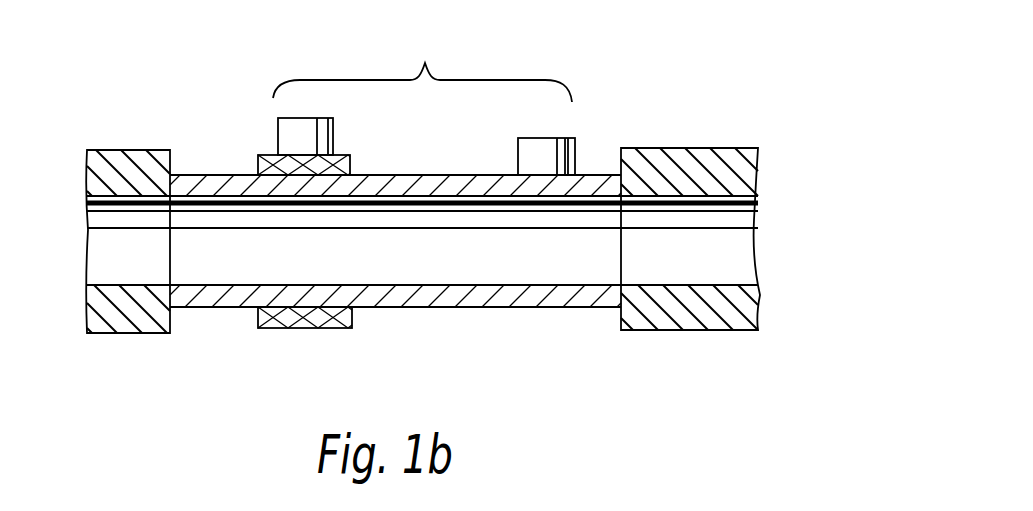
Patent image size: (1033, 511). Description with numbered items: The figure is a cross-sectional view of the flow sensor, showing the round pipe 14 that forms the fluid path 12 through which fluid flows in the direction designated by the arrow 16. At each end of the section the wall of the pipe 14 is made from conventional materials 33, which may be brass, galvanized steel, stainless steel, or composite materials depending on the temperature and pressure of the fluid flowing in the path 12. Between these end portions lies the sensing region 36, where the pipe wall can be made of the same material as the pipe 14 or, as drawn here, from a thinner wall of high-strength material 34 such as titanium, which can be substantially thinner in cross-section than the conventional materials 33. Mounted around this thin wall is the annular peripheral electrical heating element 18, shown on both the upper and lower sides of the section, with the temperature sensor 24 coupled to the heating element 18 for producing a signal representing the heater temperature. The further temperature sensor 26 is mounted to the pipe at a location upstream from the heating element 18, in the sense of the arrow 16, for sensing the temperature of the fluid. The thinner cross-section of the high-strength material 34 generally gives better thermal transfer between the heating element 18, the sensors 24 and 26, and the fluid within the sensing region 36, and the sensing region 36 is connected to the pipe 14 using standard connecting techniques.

The fluid path 12 is at (226, 277).
The round pipe 14 is at (152, 150).
The arrow 16 is at (584, 251).
The heating element 18 is at (258, 158).
The temperature sensor 24 is at (334, 142).
The further temperature sensor 26 is at (576, 141).
The conventional materials 33 is at (118, 150).
The high-strength material 34 is at (440, 175).
The sensing region 36 is at (422, 64).